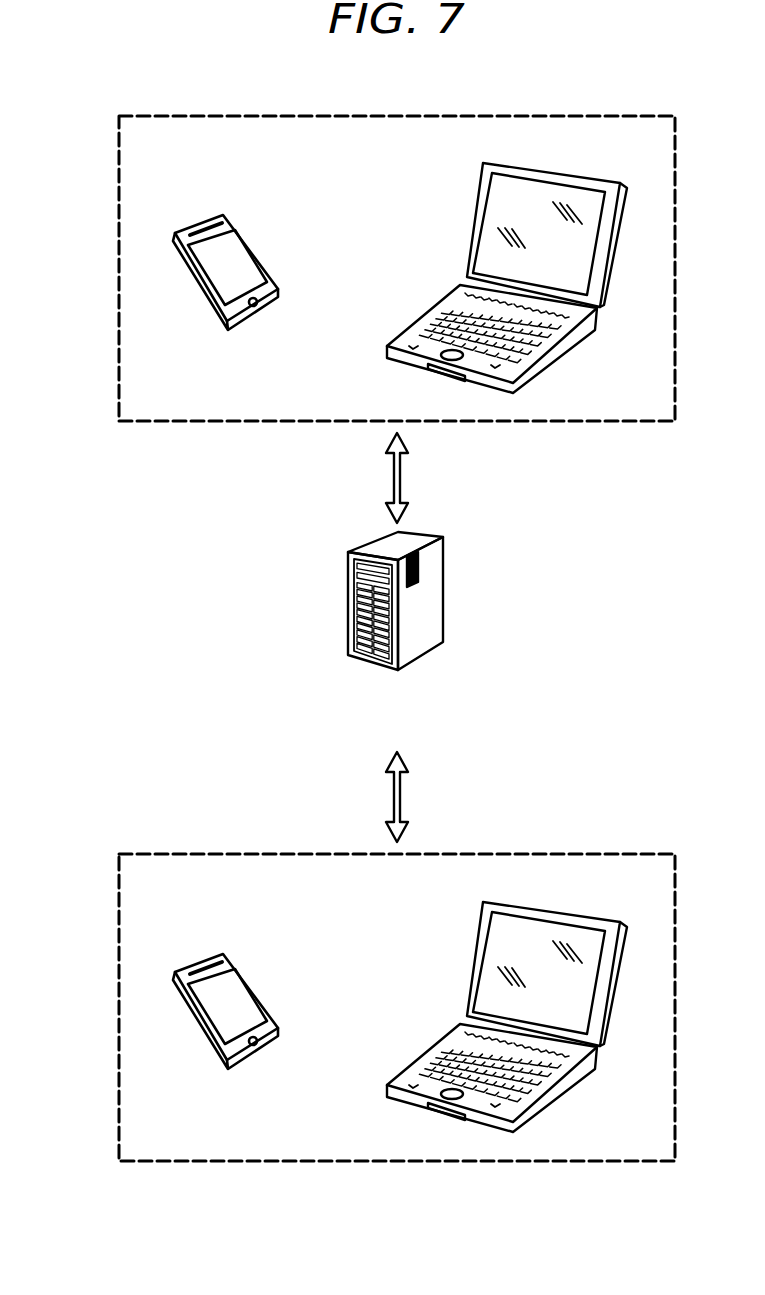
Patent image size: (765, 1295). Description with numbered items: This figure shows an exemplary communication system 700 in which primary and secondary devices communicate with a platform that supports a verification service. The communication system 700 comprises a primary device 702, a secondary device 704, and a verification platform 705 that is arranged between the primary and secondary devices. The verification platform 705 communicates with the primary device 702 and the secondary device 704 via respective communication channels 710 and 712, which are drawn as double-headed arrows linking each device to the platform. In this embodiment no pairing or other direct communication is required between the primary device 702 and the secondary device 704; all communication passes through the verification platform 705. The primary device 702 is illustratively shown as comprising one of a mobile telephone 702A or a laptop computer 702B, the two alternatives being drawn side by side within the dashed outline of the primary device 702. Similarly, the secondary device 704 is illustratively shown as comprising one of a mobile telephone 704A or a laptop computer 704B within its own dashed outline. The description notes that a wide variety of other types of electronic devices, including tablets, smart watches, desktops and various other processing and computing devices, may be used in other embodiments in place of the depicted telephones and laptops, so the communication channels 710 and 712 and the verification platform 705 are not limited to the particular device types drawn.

The communication system 700 is at (601, 92).
The primary device 702 is at (119, 128).
The mobile telephone 702A is at (243, 237).
The laptop computer 702B is at (567, 172).
The secondary device 704 is at (119, 867).
The mobile telephone 704A is at (243, 976).
The laptop computer 704B is at (567, 911).
The verification platform 705 is at (443, 593).
The communication channel 710 is at (391, 473).
The communication channel 712 is at (392, 796).